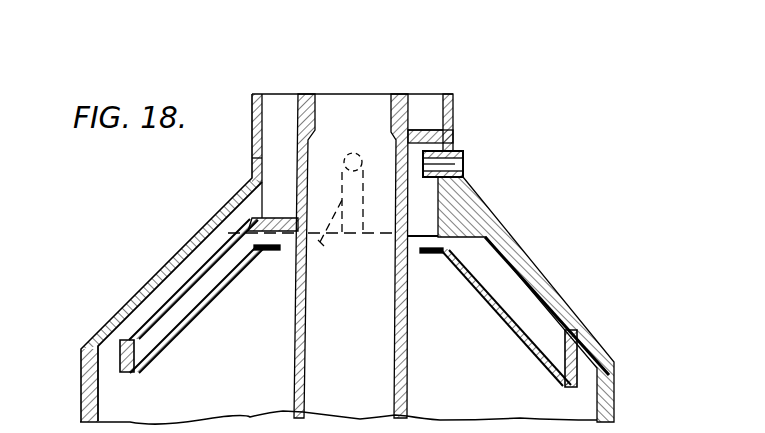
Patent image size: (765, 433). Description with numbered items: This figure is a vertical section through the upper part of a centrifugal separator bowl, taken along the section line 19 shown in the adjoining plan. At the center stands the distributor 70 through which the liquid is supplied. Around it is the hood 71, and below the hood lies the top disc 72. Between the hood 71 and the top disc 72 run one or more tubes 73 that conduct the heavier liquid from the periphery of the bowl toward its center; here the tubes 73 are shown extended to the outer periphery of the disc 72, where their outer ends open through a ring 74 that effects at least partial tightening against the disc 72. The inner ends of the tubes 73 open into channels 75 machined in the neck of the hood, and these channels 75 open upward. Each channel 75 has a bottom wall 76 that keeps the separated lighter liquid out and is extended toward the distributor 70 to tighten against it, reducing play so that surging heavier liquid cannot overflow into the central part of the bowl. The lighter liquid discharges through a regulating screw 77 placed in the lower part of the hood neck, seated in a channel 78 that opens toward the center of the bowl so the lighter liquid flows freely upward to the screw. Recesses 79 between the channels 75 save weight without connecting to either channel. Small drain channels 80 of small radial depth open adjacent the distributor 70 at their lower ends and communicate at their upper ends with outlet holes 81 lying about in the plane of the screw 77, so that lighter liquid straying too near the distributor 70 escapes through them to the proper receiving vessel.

The seal 19 is at (252, 158).
The distributor 70 is at (310, 93).
The hood 71 is at (453, 131).
The top disc 72 is at (505, 320).
The tubes 73 is at (175, 287).
The ring 74 is at (120, 360).
The channels 75 is at (278, 113).
The bottom wall 76 is at (265, 251).
The regulating screw 77 is at (463, 178).
The channel 78 is at (425, 221).
The recesses 79 is at (427, 117).
The drain channels 80 is at (322, 244).
The outlet holes 81 is at (355, 148).